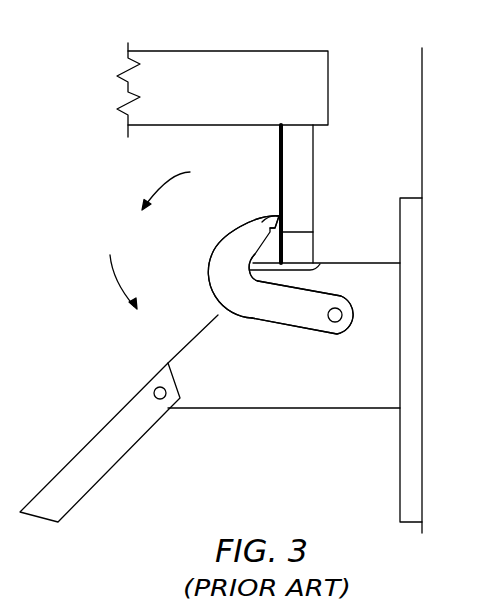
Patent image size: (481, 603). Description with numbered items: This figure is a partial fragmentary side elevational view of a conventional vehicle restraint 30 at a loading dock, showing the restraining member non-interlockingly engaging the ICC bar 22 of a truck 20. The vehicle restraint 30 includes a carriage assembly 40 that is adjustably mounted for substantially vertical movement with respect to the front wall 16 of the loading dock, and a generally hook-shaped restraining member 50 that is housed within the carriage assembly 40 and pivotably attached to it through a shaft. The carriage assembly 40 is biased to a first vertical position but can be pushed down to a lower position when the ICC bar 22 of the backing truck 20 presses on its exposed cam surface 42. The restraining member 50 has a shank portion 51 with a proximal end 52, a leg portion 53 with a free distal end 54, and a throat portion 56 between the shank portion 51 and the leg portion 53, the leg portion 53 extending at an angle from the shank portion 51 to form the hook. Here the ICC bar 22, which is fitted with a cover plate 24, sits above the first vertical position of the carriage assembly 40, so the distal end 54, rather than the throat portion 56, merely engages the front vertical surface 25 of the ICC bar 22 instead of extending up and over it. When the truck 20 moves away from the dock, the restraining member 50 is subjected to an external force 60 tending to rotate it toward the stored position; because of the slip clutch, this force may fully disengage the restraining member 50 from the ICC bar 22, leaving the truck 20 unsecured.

The front wall 16 is at (422, 112).
The truck 20 is at (250, 100).
The ICC bar 22 is at (307, 244).
The cover plate 24 is at (279, 143).
The front vertical surface 25 is at (230, 256).
The vehicle restraint 30 is at (115, 270).
The carriage assembly 40 is at (295, 392).
The cam surface 42 is at (177, 350).
The restraining member 50 is at (220, 283).
The shank portion 51 is at (268, 311).
The proximal end 52 is at (352, 329).
The leg portion 53 is at (227, 243).
The distal end 54 is at (277, 216).
The throat portion 56 is at (322, 265).
The external force 60 is at (159, 182).